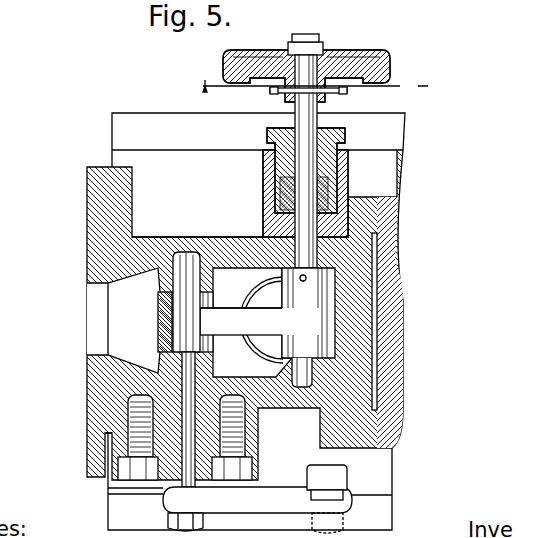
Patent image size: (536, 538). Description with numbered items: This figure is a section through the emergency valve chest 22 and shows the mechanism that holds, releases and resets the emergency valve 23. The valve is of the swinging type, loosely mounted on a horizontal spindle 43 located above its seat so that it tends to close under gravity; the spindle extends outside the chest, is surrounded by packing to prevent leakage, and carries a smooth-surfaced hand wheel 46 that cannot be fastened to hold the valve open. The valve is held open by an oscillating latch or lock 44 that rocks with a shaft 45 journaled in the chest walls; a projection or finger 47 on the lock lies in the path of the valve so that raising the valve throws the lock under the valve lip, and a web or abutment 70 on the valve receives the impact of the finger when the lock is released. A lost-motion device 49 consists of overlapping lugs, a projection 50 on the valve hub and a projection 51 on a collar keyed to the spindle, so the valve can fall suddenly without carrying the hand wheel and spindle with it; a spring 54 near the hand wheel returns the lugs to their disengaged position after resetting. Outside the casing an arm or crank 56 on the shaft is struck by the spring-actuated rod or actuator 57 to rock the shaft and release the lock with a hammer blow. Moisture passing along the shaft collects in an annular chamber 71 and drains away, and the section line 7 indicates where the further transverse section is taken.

The section line 7— 7 is at (311, 89).
The emergency valve chest 22 is at (197, 222).
The emergency valve 23 is at (283, 298).
The spindle 43 is at (303, 155).
The latch or lock 44 is at (158, 323).
The shaft 45 is at (178, 470).
The hand wheel 46 is at (348, 63).
The projection or finger 47 is at (258, 321).
The lost-motion device 49 is at (328, 290).
The projection on valve hub 50 is at (298, 321).
The projection on spindle collar 51 is at (312, 298).
The spring 54 is at (347, 93).
The arm or crank 56 is at (248, 481).
The rod or actuator 57 is at (338, 477).
The web or abutment 70 is at (241, 320).
The annular chamber 71 is at (168, 445).